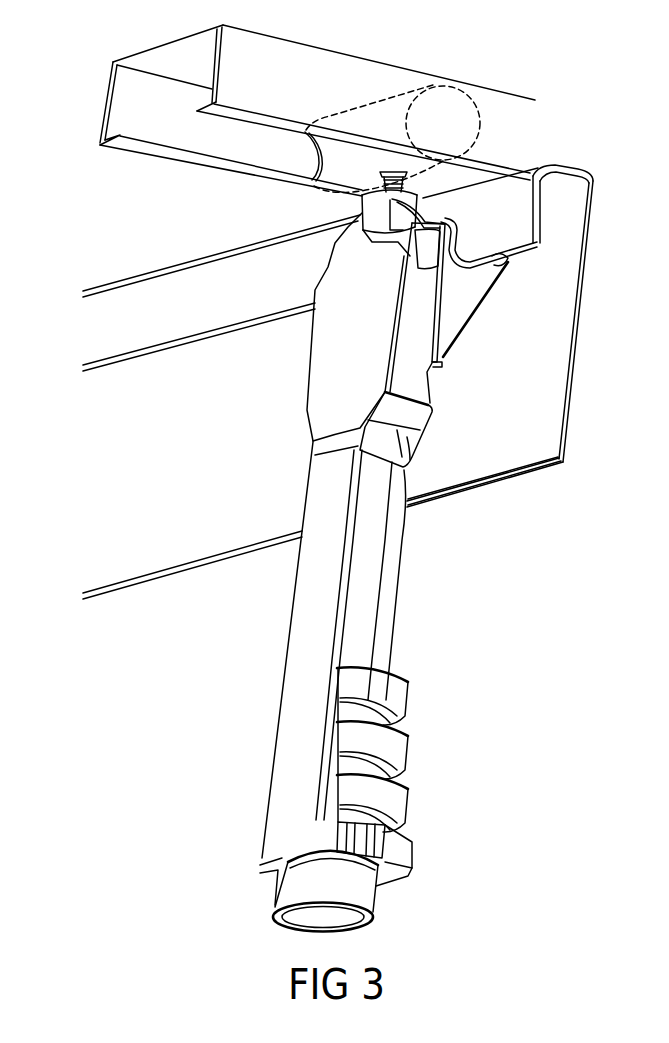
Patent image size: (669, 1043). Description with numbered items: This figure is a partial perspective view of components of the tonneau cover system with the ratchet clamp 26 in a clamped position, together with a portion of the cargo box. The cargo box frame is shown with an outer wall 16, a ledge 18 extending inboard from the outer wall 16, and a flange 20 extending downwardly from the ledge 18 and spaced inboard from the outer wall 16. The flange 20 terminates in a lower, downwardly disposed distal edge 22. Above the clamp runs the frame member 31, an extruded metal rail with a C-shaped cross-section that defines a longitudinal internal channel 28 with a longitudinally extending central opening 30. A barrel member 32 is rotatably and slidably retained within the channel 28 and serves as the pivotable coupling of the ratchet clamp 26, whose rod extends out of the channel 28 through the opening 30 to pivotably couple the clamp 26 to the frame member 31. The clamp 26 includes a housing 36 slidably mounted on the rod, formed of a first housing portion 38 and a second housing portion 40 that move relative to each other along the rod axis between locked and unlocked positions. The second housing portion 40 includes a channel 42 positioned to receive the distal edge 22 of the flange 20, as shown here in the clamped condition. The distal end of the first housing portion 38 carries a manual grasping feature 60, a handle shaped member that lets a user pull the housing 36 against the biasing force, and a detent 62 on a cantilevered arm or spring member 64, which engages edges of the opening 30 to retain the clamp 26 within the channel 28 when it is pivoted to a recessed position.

The outer wall 16 is at (578, 332).
The ledge 18 is at (567, 172).
The flange 20 is at (540, 212).
The distal edge 22 is at (530, 253).
The ratchet clamp 26 is at (276, 213).
The internal channel 28 is at (110, 102).
The central opening 30 is at (213, 143).
The frame member 31 is at (287, 72).
The barrel member 32 is at (480, 120).
The housing 36 is at (441, 380).
The first housing portion 38 is at (327, 382).
The second housing portion 40 is at (460, 313).
The channel 42 is at (507, 264).
The manual grasping feature 60 is at (312, 620).
The detent 62 is at (380, 846).
The spring member 64 is at (343, 838).